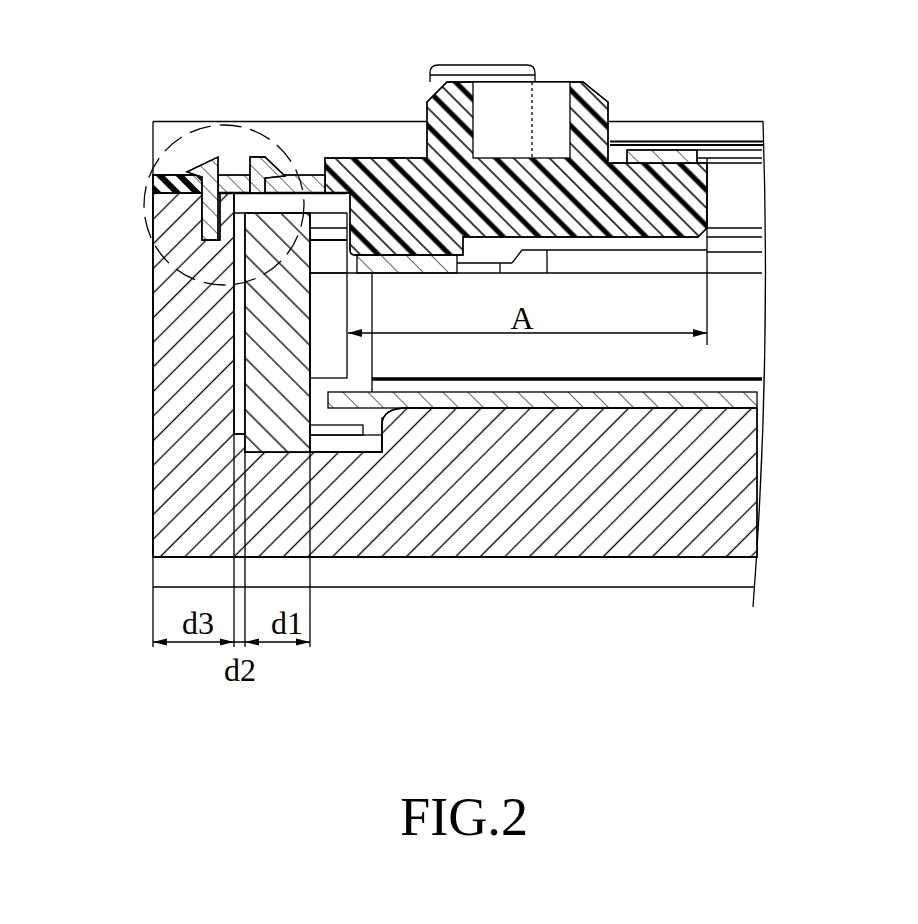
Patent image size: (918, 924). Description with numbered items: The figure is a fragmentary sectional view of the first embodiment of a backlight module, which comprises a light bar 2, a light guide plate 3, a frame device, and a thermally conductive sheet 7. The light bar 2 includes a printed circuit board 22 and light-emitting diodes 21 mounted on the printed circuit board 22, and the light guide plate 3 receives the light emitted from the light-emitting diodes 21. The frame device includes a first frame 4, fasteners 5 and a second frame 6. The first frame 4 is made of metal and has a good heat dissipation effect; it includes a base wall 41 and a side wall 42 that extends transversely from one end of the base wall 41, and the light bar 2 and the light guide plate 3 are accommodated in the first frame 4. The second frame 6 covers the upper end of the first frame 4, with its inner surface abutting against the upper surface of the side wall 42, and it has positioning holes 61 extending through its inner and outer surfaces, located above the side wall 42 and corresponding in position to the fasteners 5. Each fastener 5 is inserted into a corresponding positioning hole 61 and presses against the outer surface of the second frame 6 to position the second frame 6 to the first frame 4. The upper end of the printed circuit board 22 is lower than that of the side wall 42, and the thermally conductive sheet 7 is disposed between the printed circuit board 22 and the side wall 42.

The light bar 2 is at (300, 65).
The light-emitting diodes 21 is at (327, 242).
The printed circuit board 22 is at (307, 207).
The light guide plate 3 is at (753, 321).
The first frame 4 is at (120, 396).
The base wall 41 is at (753, 473).
The side wall 42 is at (165, 447).
The fasteners 5 is at (214, 124).
The second frame 6 is at (152, 190).
The positioning holes 61 is at (172, 191).
The thermally conductive sheet 7 is at (243, 305).